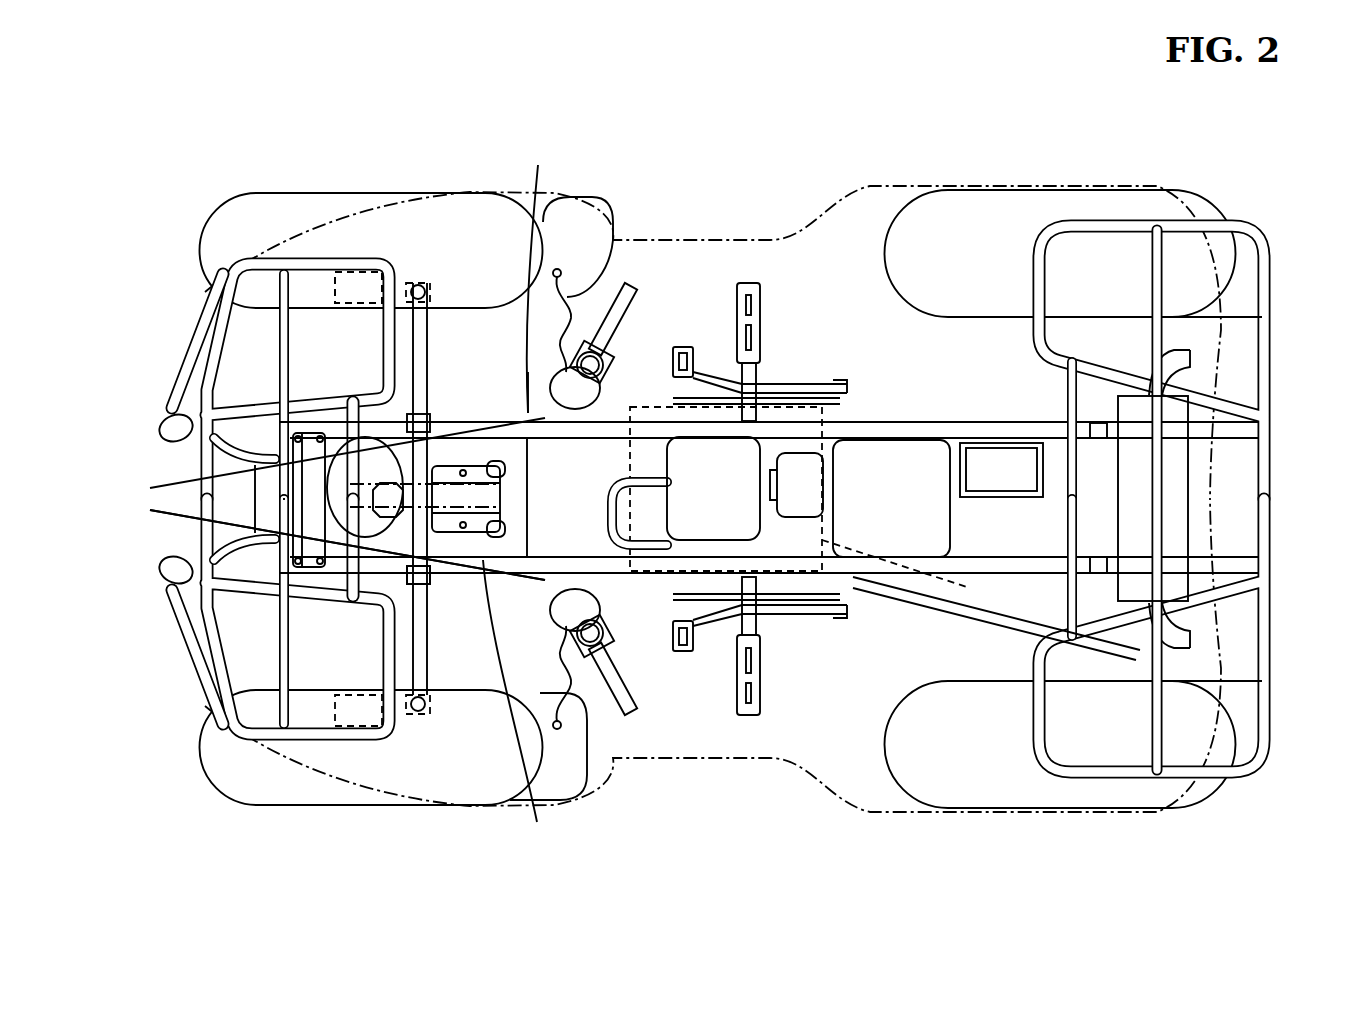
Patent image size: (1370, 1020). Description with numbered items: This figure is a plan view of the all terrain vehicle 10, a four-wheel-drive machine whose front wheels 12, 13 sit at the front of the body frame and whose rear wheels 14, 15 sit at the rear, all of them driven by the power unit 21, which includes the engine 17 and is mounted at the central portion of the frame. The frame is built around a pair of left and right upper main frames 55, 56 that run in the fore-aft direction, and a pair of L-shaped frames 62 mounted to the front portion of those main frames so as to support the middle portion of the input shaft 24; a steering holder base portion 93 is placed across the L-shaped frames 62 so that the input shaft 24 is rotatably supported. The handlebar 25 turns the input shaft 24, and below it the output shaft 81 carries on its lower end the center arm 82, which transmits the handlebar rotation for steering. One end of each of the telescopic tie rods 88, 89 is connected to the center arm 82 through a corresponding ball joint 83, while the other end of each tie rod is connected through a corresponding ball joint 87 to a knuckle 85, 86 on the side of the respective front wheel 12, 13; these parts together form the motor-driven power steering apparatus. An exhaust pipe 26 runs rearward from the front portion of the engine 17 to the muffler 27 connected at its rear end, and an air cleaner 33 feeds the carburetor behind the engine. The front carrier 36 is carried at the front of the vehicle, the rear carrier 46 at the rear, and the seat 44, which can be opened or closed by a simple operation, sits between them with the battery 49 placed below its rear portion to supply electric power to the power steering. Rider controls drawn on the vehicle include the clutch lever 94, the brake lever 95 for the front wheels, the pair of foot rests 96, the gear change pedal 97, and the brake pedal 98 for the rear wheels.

The all terrain vehicle 10 is at (336, 92).
The front wheel 12 is at (290, 808).
The front wheel 13 is at (272, 194).
The rear wheel 14 is at (980, 808).
The rear wheel 15 is at (983, 190).
The engine 17 is at (784, 452).
The power unit 21 is at (650, 474).
The input shaft 24 is at (500, 508).
The handlebar 25 is at (528, 372).
The exhaust pipe 26 is at (1047, 560).
The muffler 27 is at (1190, 507).
The air cleaner 33 is at (970, 575).
The front carrier 36 is at (347, 257).
The seat 44 is at (946, 422).
The rear carrier 46 is at (1275, 330).
The battery 49 is at (989, 452).
The upper main frame 55 is at (870, 575).
The upper main frame 56 is at (887, 422).
The L-shaped frame 62 is at (548, 502).
The output shaft 81 is at (257, 486).
The center arm 82 is at (300, 524).
The ball joint 83 is at (200, 412).
The knuckle 85 is at (397, 730).
The knuckle 86 is at (392, 272).
The ball joint 87 is at (418, 283).
The telescopic tie rod 88 is at (420, 630).
The telescopic tie rod 89 is at (422, 365).
The steering holder base portion 93 is at (500, 470).
The clutch lever 94 is at (562, 730).
The brake lever 95 is at (560, 270).
The foot rest 96 is at (748, 283).
The gear change pedal 97 is at (683, 650).
The brake pedal 98 is at (686, 346).